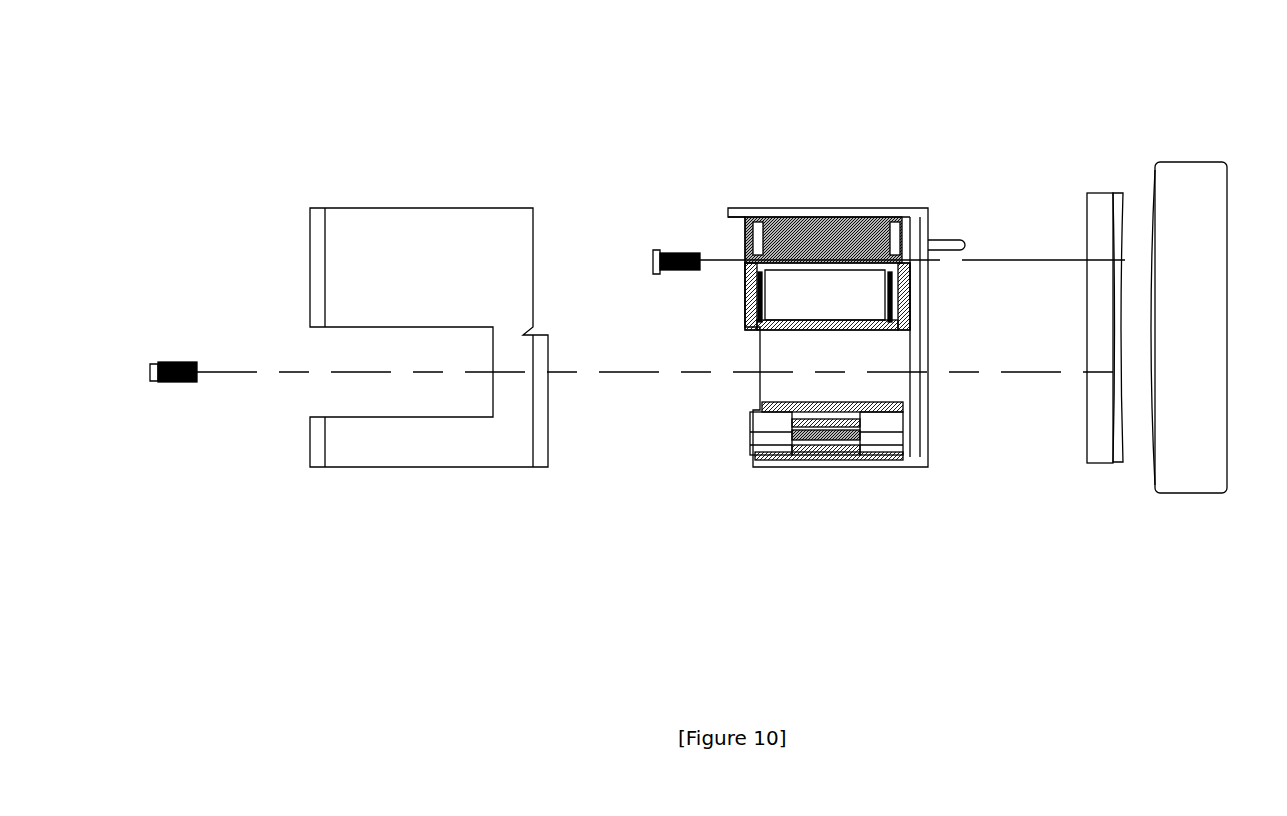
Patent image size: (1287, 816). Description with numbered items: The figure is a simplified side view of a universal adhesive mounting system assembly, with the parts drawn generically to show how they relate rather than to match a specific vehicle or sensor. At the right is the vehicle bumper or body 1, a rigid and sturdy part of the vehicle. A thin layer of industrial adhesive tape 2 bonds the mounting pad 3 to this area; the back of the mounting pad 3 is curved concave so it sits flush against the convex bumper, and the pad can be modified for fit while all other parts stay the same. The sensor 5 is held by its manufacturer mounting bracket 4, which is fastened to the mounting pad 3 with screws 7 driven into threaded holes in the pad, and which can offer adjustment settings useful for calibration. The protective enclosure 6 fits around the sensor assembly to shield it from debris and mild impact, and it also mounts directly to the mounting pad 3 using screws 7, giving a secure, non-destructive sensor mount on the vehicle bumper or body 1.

The vehicle bumper or body 1 is at (1188, 323).
The industrial adhesive tape 2 is at (1125, 467).
The mounting pad 3 is at (1087, 465).
The manufacturer mounting bracket 4 is at (848, 207).
The sensor 5 is at (823, 297).
The protective enclosure 6 is at (422, 262).
The screws 7 is at (157, 383).